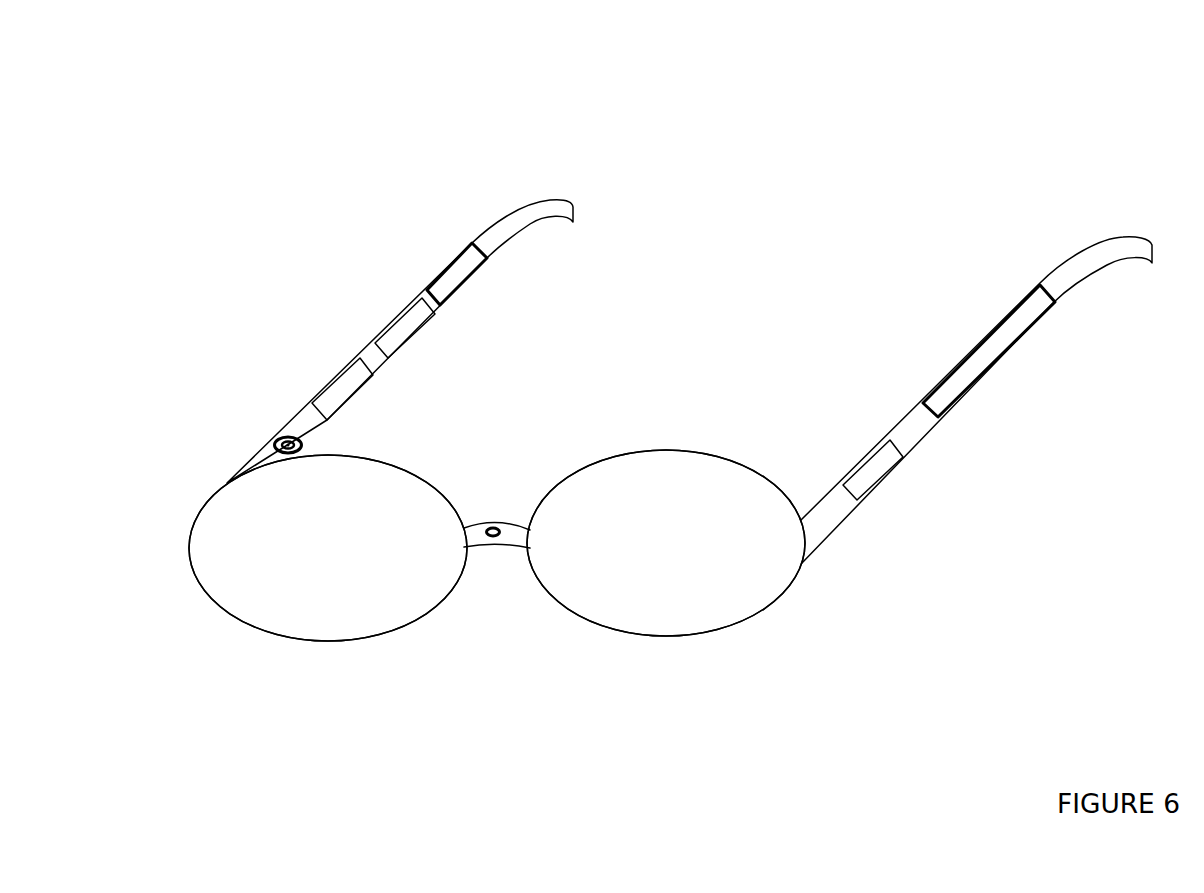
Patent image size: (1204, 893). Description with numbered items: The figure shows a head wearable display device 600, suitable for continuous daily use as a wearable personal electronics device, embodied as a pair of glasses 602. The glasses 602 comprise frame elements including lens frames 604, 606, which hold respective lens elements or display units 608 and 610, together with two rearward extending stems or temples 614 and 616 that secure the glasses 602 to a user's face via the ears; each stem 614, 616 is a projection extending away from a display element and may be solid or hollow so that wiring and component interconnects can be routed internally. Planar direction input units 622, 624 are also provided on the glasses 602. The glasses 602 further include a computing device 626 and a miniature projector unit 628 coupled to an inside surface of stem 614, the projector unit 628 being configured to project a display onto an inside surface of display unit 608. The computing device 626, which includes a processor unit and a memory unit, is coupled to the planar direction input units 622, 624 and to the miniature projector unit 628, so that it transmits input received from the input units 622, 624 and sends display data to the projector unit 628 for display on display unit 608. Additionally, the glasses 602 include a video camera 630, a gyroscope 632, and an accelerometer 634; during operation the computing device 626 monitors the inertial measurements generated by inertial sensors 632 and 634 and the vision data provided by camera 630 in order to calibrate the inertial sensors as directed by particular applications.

The head wearable display device 600 is at (275, 133).
The glasses 602 is at (477, 526).
The lens frame 604 is at (750, 618).
The lens frame 606 is at (432, 612).
The display unit 608 is at (652, 603).
The display unit 610 is at (340, 617).
The stem 614 is at (487, 236).
The stem 616 is at (1055, 288).
The planar direction input unit 622 is at (862, 478).
The planar direction input unit 624 is at (452, 275).
The computing device 626 is at (957, 383).
The miniature projector unit 628 is at (288, 433).
The video camera 630 is at (500, 527).
The gyroscope 632 is at (332, 397).
The accelerometer 634 is at (390, 345).